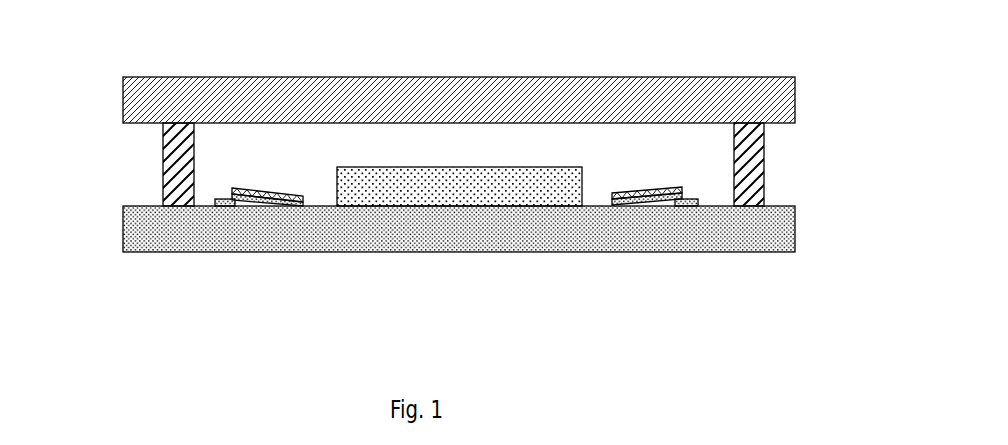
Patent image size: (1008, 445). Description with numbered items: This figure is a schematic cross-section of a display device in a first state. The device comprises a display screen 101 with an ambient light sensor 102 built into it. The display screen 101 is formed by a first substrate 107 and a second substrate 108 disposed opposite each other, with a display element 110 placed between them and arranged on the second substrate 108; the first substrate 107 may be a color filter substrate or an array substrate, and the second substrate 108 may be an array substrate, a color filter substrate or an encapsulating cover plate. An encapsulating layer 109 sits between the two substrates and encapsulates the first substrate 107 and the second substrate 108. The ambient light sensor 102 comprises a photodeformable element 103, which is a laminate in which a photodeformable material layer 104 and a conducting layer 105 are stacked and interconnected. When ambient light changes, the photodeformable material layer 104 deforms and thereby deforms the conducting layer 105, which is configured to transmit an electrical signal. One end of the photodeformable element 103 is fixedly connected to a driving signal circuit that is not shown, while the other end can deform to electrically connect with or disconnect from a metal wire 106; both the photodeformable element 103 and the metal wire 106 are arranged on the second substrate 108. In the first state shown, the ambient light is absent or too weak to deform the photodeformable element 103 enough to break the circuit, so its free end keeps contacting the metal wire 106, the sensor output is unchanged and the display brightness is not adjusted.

The display screen 101 is at (462, 200).
The ambient light sensor 102 is at (625, 276).
The photodeformable element 103 is at (617, 257).
The photodeformable material layer 104 is at (617, 237).
The conducting layer 105 is at (647, 240).
The metal wire 106 is at (667, 263).
The first substrate 107 is at (459, 79).
The second substrate 108 is at (493, 229).
The encapsulating layer 109 is at (407, 164).
The display element 110 is at (459, 235).